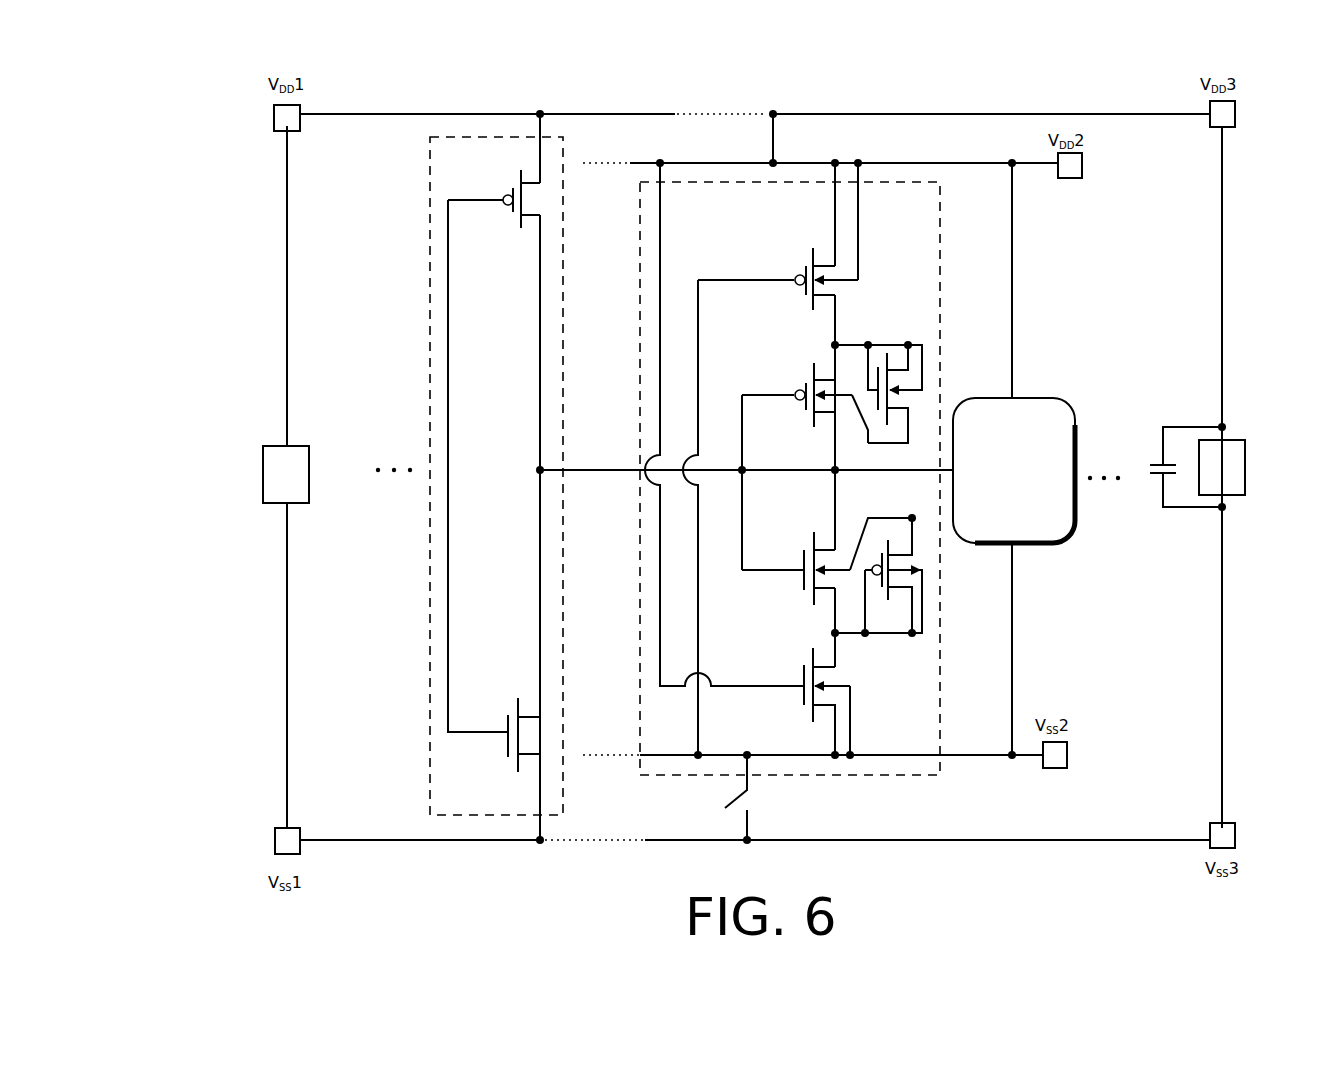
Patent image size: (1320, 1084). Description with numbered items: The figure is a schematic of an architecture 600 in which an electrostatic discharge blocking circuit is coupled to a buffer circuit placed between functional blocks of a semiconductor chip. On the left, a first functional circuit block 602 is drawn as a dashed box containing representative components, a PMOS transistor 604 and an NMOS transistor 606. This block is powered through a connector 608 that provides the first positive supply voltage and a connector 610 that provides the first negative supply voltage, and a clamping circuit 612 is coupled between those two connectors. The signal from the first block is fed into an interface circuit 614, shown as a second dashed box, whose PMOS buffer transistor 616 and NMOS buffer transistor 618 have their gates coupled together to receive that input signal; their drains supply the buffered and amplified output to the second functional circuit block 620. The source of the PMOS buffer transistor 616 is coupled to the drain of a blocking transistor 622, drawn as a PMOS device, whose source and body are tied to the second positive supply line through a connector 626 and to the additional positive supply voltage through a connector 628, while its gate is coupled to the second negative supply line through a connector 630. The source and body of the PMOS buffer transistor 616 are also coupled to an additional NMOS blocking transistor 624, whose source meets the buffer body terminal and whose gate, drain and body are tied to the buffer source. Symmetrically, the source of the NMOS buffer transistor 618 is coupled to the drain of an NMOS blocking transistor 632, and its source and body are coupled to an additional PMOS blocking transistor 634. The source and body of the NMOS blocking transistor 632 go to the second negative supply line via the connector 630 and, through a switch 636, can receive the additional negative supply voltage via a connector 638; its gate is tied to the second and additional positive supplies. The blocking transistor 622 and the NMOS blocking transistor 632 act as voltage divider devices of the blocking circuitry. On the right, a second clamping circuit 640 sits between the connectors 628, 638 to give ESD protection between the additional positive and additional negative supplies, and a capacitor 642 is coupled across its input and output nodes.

The architecture 600 is at (182, 89).
The first functional circuit block 602 is at (467, 476).
The PMOS transistor 604 is at (521, 178).
The NMOS transistor 606 is at (518, 702).
The connector 608 is at (275, 120).
The connector 610 is at (275, 843).
The clamping circuit 612 is at (305, 446).
The interface circuit 614 is at (765, 469).
The PMOS buffer transistor 616 is at (812, 373).
The NMOS buffer transistor 618 is at (805, 562).
The second functional circuit block 620 is at (1014, 470).
The blocking transistor 622 is at (813, 303).
The additional NMOS blocking transistor 624 is at (887, 412).
The connector 626 is at (1070, 178).
The connector 628 is at (1236, 118).
The connector 630 is at (1055, 768).
The NMOS blocking transistor 632 is at (804, 672).
The additional PMOS blocking transistor 634 is at (888, 596).
The switch 636 is at (745, 826).
The connector 638 is at (1236, 835).
The second clamping circuit 640 is at (1247, 472).
The capacitor 642 is at (1155, 465).